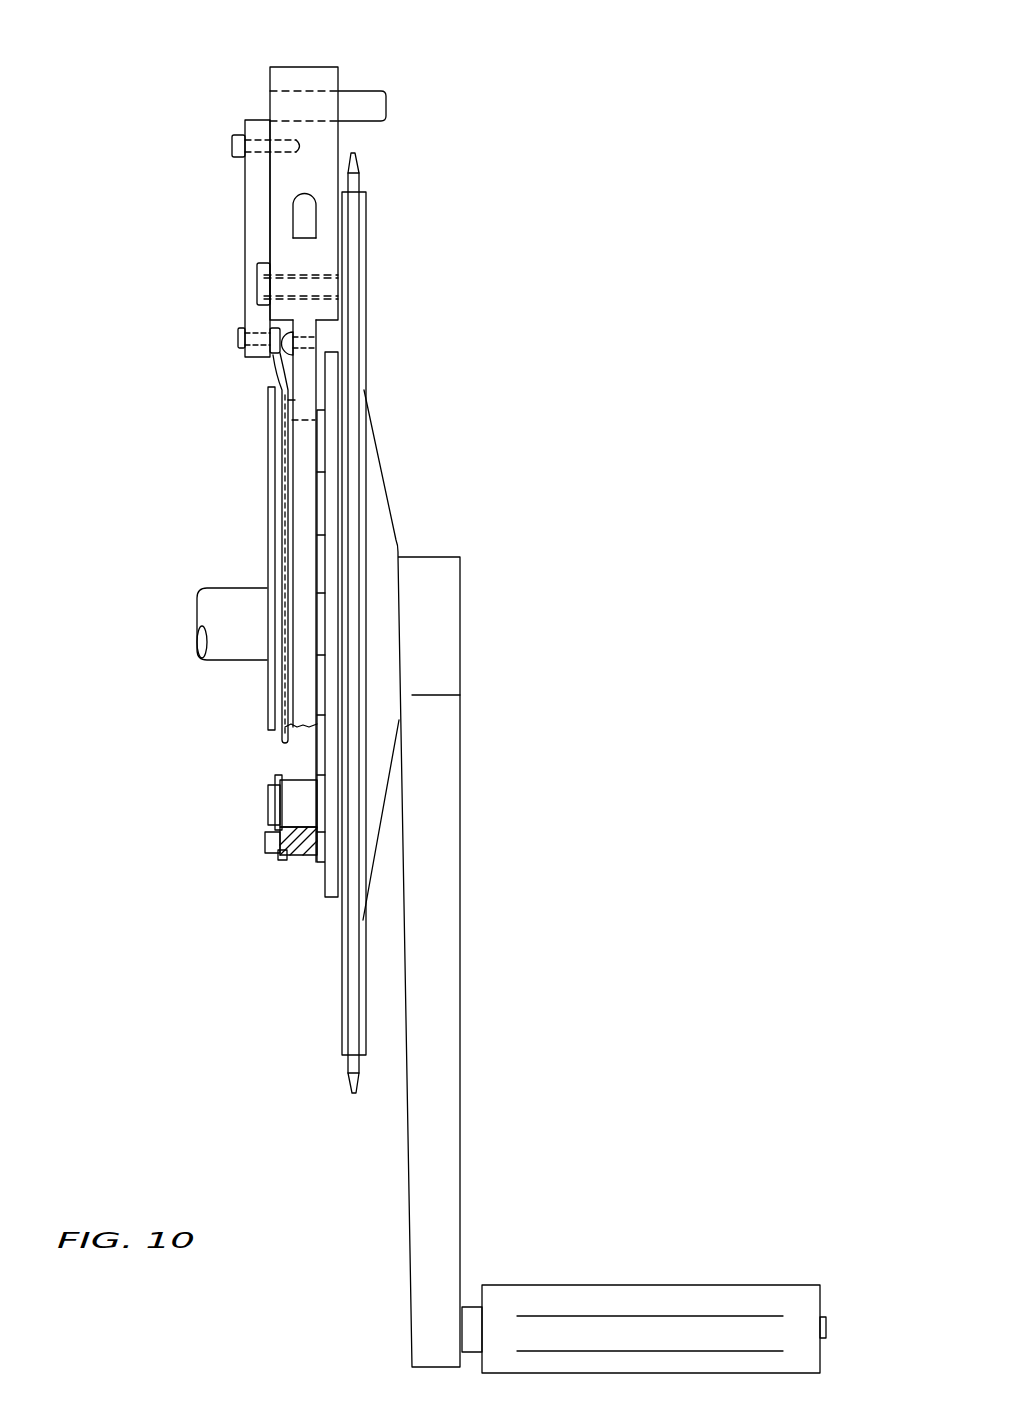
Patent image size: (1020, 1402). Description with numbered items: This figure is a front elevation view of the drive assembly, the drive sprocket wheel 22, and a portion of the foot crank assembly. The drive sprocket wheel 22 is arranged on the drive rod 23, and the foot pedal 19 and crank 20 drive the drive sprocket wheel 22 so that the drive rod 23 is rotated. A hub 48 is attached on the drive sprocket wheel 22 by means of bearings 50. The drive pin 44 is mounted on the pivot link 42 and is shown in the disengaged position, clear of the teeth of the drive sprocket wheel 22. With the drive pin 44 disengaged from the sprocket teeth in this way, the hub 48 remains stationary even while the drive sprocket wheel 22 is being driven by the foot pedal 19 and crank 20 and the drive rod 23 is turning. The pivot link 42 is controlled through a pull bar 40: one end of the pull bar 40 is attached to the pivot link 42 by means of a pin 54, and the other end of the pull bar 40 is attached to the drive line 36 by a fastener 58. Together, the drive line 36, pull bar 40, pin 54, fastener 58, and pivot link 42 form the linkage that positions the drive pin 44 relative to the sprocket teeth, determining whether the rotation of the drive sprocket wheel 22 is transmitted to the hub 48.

The foot pedal 19 is at (622, 1292).
The crank 20 is at (452, 1023).
The drive sprocket wheel 22 is at (358, 167).
The drive rod 23 is at (226, 601).
The drive line 36 is at (267, 372).
The pull bar 40 is at (248, 197).
The pivot link 42 is at (307, 73).
The drive pin 44 is at (378, 108).
The hub 48 is at (267, 850).
The bearings 50 is at (267, 805).
The pin 54 is at (232, 146).
The fastener 58 is at (237, 332).